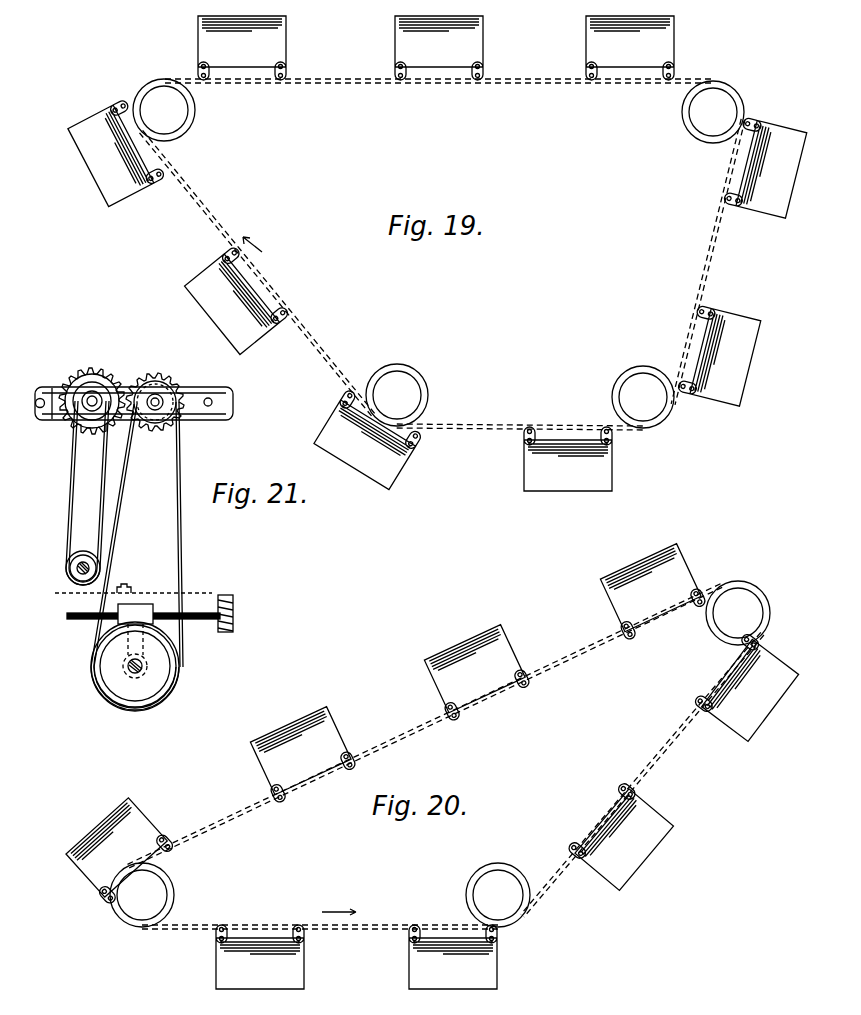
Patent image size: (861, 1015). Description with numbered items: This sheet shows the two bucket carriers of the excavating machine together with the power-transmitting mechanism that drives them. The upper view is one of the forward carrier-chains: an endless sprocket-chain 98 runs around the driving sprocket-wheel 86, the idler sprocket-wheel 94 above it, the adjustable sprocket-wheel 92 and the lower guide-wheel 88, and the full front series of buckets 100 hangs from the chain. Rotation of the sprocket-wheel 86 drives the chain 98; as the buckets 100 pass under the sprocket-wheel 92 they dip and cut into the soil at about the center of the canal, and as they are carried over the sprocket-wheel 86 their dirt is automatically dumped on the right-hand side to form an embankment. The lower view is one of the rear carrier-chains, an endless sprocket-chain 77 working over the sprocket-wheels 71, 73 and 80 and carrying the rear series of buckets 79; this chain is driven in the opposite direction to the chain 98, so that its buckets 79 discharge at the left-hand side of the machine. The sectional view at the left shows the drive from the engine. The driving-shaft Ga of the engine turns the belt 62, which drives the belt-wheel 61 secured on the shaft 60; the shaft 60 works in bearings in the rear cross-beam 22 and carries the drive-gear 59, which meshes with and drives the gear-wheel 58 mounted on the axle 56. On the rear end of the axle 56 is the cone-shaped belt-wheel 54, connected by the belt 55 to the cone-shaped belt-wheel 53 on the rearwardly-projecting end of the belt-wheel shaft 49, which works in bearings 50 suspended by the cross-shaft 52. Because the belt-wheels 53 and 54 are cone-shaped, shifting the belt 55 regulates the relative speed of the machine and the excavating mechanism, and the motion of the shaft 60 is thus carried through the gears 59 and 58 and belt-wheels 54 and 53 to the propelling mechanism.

In FIG. 19, the sprocket-chains 98 is at (527, 80).
In FIG. 19, the sprocket-wheels 86 is at (176, 112).
In FIG. 19, the idler sprocket-wheels 94 is at (722, 106).
In FIG. 19, the sprocket-wheels 92 is at (634, 376).
In FIG. 19, the lower sprocket guide-wheels 88 is at (404, 378).
In FIG. 19, the front series of buckets 100 is at (437, 253).
In FIG. 21, the rear cross-beam 22 is at (233, 404).
In FIG. 21, the drive-gear 59 is at (89, 372).
In FIG. 21, the shaft 60 is at (84, 409).
In FIG. 21, the belt-wheel 61 is at (93, 416).
In FIG. 21, the gear-wheel 58 is at (168, 381).
In FIG. 21, the belt-wheel 54 is at (158, 416).
In FIG. 21, the axle 56 is at (160, 406).
In FIG. 21, the belt 62 is at (70, 518).
In FIG. 21, the driving-shaft of the engine Ga is at (75, 572).
In FIG. 21, the belt 55 is at (183, 525).
In FIG. 21, the cross-shaft 52 is at (182, 612).
In FIG. 21, the bearings 50 is at (133, 609).
In FIG. 21, the belt-wheel 53 is at (108, 672).
In FIG. 21, the belt-wheel shaft 49 is at (145, 665).
In FIG. 20, the endless sprocket-chains 77 is at (417, 733).
In FIG. 20, the sprocket-wheels 80 is at (157, 890).
In FIG. 20, the sprocket-wheels 71 is at (710, 628).
In FIG. 20, the sprocket-wheels 73 is at (472, 882).
In FIG. 20, the rear series of buckets 79 is at (431, 766).